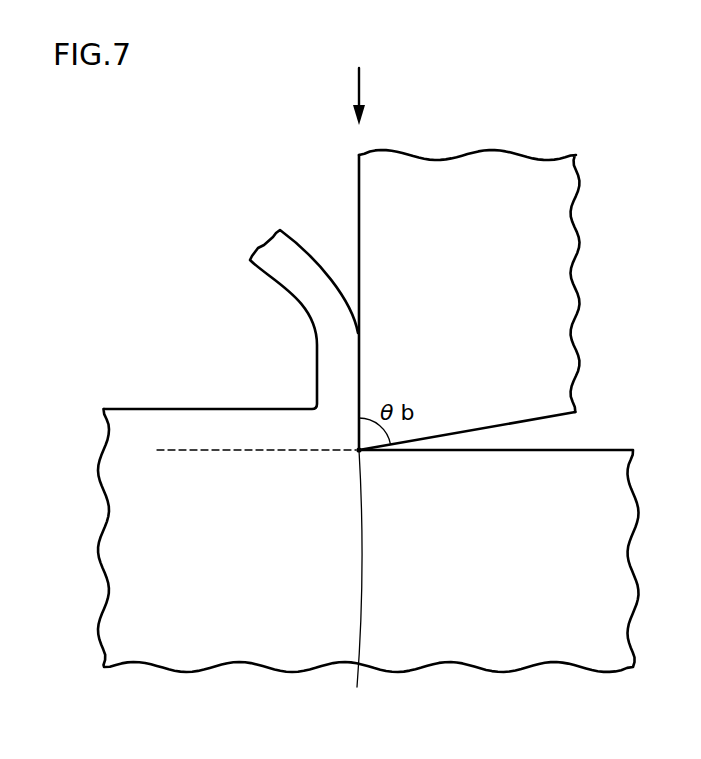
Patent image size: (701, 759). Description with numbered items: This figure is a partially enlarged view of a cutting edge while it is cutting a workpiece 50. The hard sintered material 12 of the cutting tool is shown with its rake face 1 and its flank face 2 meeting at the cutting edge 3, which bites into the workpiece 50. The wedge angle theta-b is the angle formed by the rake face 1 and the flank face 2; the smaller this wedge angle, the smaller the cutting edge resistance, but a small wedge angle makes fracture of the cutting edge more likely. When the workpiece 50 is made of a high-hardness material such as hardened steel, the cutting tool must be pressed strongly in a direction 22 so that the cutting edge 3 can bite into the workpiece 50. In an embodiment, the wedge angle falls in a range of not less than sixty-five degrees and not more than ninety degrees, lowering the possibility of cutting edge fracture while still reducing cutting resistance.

The rake face 1 is at (357, 193).
The flank face 2 is at (549, 417).
The cutting edge 3 is at (360, 582).
The hard sintered material 12 is at (472, 177).
The direction 22 is at (356, 94).
The workpiece 50 is at (232, 638).